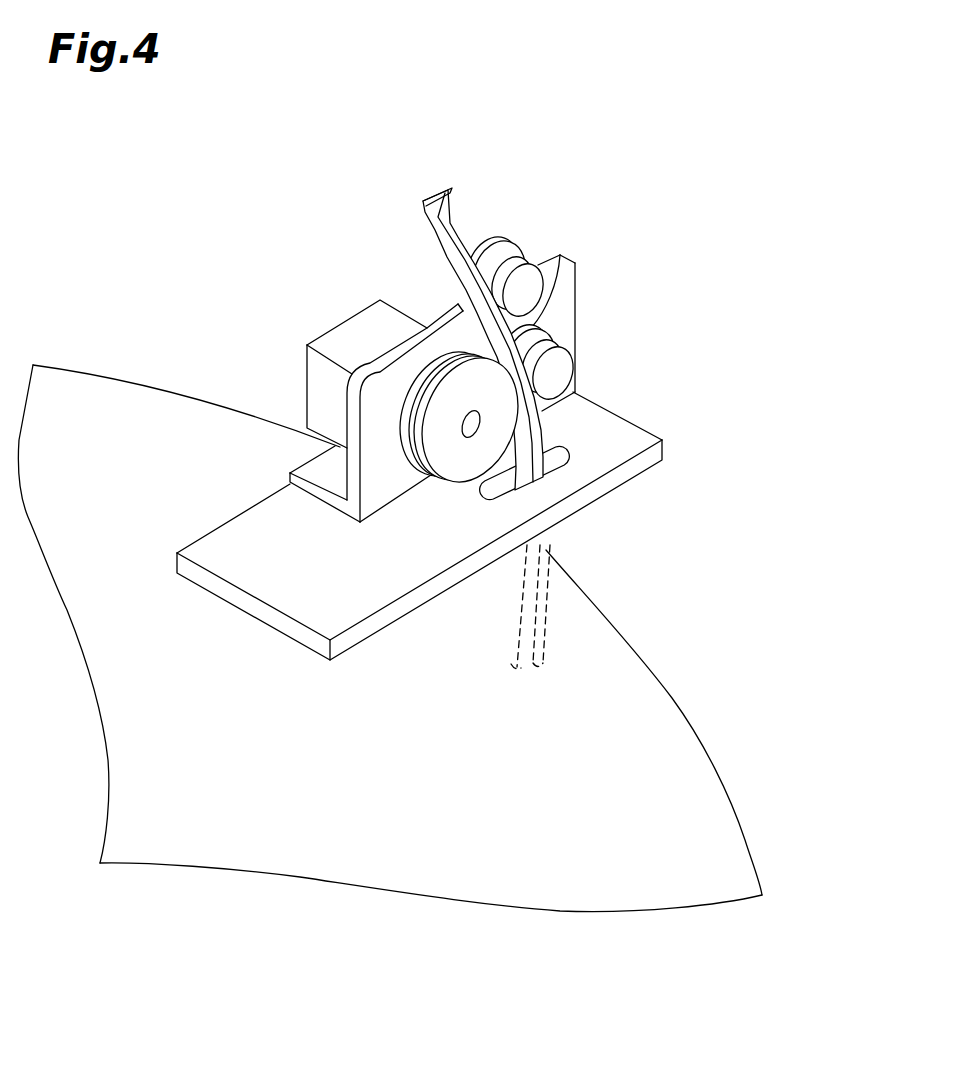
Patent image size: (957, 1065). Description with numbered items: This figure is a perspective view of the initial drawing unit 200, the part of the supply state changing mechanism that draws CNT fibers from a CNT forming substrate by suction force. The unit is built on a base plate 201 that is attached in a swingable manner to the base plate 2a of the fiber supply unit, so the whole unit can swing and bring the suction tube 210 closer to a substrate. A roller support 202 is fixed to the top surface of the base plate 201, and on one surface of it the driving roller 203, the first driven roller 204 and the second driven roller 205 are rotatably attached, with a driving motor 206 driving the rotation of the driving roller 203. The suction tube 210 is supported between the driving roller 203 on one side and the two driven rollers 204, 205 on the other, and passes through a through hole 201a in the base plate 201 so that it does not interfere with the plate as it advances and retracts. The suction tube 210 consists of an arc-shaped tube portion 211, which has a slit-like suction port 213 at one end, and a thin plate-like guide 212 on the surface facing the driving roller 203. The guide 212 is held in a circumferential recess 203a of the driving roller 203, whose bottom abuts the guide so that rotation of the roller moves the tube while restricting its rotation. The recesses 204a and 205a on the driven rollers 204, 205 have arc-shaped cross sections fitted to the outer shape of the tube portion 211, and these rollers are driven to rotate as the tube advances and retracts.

The base plate 2a is at (90, 410).
The initial drawing unit 200 is at (470, 392).
The base plate 201 is at (238, 537).
The through hole 201a is at (556, 449).
The roller support 202 is at (377, 405).
The driving roller 203 is at (450, 467).
The recess 203a is at (452, 355).
The first driven roller 204 is at (527, 280).
The recess 204a is at (510, 247).
The second driven roller 205 is at (560, 377).
The recess 205a is at (555, 340).
The driving motor 206 is at (352, 343).
The suction tube 210 is at (553, 543).
The tube portion 211 is at (577, 260).
The guide 212 is at (438, 302).
The suction port 213 is at (438, 193).